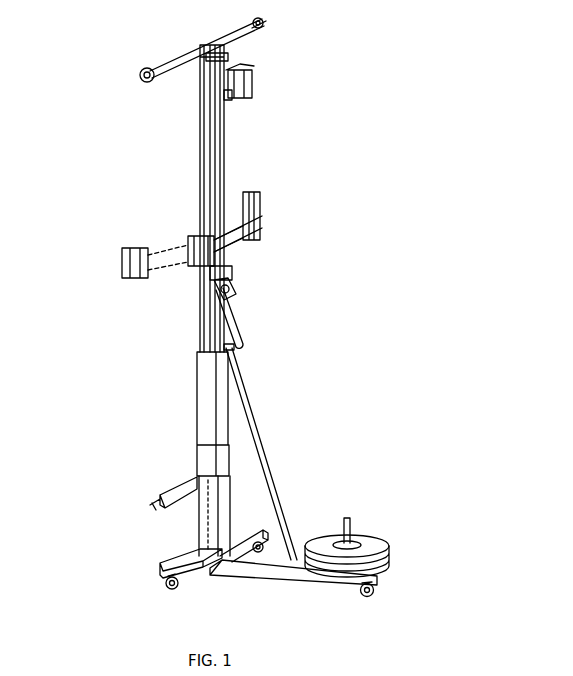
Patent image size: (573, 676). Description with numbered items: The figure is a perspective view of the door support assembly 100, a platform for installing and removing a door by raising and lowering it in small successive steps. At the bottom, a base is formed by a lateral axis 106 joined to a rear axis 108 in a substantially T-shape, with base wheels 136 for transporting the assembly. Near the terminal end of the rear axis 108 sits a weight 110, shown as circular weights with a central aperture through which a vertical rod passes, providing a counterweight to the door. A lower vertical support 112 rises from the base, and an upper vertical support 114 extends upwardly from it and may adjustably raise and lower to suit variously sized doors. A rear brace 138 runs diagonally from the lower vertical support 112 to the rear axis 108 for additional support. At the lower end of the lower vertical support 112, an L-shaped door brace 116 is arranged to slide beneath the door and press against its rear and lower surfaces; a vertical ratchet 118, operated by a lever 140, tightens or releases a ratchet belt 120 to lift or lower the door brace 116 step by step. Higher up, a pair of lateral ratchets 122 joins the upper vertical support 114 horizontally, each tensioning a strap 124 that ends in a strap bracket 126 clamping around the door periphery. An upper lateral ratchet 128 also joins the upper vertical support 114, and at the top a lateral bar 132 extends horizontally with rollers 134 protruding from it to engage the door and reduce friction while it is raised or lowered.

The door support assembly 100 is at (456, 262).
The lateral axis 106 is at (203, 573).
The rear axis 108 is at (257, 573).
The weight 110 is at (393, 542).
The lower vertical support 112 is at (200, 408).
The upper vertical support 114 is at (200, 158).
The door brace 116 is at (152, 506).
The vertical ratchet 118 is at (238, 276).
The ratchet belt 120 is at (200, 390).
The lateral ratchet 122 is at (190, 242).
The strap 124 is at (172, 266).
The strap bracket 126 is at (262, 196).
The upper lateral ratchet 128 is at (253, 96).
The lateral bar 132 is at (262, 26).
The roller 134 is at (141, 72).
The base wheel 136 is at (165, 587).
The rear brace 138 is at (262, 447).
The lever 140 is at (237, 323).